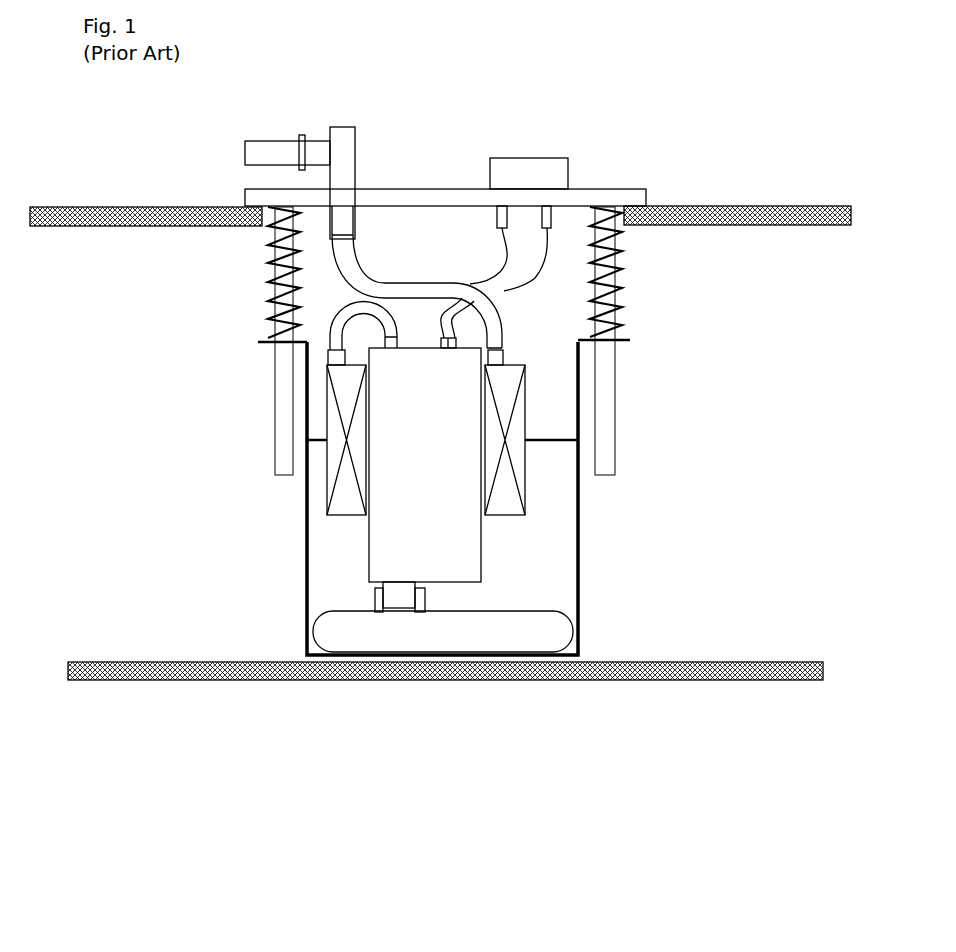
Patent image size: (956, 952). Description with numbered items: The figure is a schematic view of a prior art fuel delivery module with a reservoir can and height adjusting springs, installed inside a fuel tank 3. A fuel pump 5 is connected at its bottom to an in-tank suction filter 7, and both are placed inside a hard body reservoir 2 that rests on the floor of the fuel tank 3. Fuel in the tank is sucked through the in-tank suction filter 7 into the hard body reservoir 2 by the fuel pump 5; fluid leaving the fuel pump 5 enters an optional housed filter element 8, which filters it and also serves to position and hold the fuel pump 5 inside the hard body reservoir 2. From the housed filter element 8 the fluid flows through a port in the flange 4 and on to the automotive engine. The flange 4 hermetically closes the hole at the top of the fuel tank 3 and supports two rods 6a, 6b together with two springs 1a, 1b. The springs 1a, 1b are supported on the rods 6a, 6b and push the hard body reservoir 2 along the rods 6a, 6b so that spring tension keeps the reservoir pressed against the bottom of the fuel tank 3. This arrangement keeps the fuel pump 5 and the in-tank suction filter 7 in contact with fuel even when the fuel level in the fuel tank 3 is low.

The spring 1a is at (270, 282).
The spring 1b is at (607, 312).
The hard body reservoir 2 is at (583, 602).
The fuel tank 3 is at (658, 662).
The flange 4 is at (432, 197).
The fuel pump 5 is at (440, 535).
The rod 6a is at (287, 372).
The rod 6b is at (607, 463).
The in-tank suction filter 7 is at (465, 625).
The housed filter element 8 is at (345, 483).